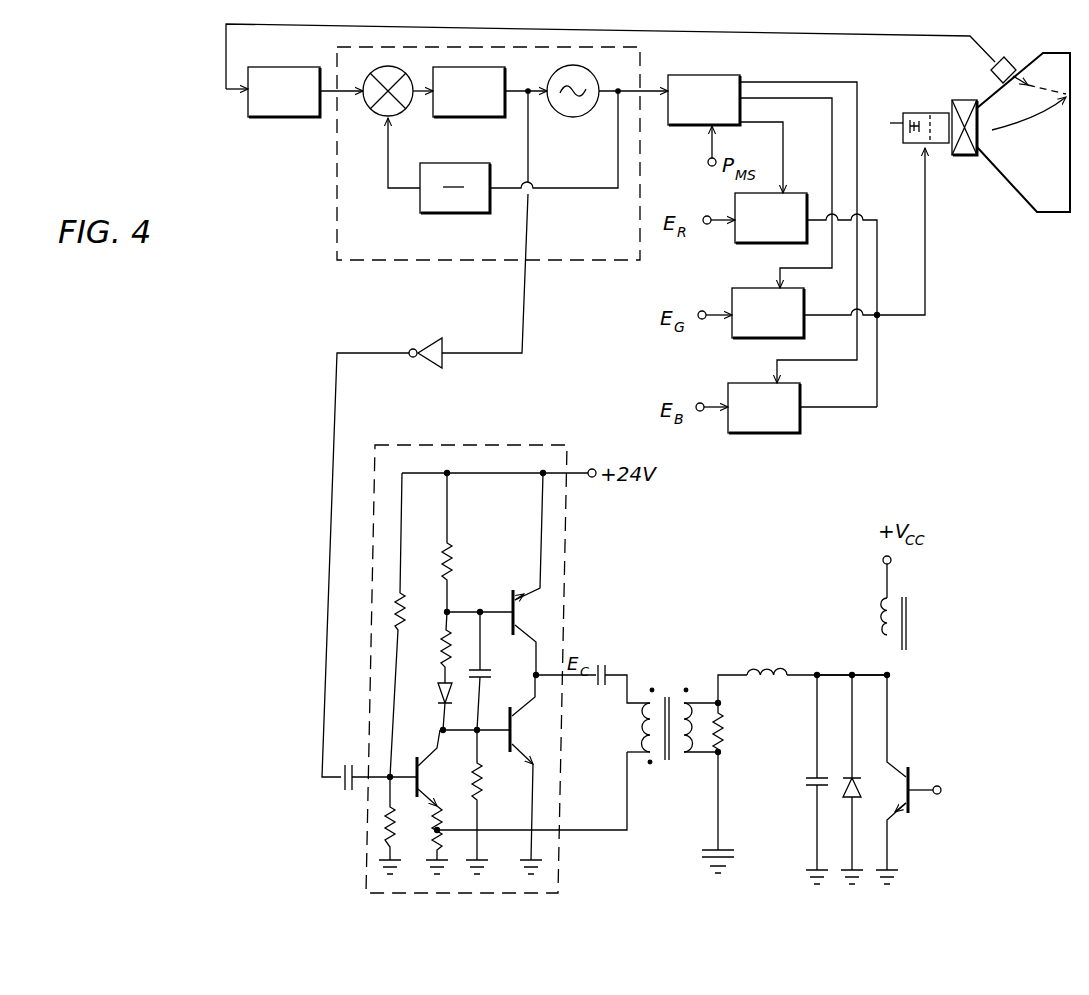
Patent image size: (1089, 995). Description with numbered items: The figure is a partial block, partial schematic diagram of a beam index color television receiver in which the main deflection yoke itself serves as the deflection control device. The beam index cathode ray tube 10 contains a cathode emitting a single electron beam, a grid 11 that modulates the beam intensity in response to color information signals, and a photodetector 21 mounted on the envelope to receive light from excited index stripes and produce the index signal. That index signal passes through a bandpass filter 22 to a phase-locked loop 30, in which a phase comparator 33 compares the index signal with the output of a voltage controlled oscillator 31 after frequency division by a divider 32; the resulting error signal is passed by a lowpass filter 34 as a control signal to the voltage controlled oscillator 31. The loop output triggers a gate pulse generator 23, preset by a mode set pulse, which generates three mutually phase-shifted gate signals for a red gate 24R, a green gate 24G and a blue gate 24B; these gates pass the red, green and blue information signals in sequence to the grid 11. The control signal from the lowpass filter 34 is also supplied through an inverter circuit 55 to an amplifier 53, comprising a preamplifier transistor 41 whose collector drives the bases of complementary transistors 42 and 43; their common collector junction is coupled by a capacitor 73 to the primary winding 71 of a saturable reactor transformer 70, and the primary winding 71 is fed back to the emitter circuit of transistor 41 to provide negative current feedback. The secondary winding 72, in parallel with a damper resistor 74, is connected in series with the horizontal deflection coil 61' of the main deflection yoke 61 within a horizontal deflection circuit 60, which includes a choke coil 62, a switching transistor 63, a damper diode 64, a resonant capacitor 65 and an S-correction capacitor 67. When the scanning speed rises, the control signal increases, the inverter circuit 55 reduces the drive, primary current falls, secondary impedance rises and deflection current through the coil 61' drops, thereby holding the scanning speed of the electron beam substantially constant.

The beam index cathode ray tube 10 is at (1010, 187).
The grid 11 is at (934, 118).
The photodetector 21 is at (991, 72).
The bandpass filter 22 is at (277, 118).
The gate pulse generator 23 is at (677, 126).
The red gate 24R is at (765, 244).
The green gate 24G is at (757, 339).
The blue gate 24B is at (750, 434).
The phase-locked loop 30 is at (418, 262).
The voltage controlled oscillator 31 is at (571, 118).
The divider 32 is at (438, 214).
The phase comparator 33 is at (370, 109).
The lowpass filter 34 is at (468, 118).
The preamplifier transistor 41 is at (422, 773).
The PNP transistor 42 is at (520, 608).
The NPN transistor 43 is at (517, 728).
The amplifier 53 is at (548, 893).
The inverter circuit 55 is at (428, 369).
The horizontal deflection circuit 60 is at (848, 655).
The main deflection yoke 61 is at (957, 150).
The horizontal deflection coil 61' is at (770, 692).
The choke coil 62 is at (907, 636).
The switching transistor 63 is at (887, 816).
The damper diode 64 is at (845, 801).
The resonant capacitor 65 is at (805, 781).
The S-correction capacitor 67 is at (730, 857).
The saturable reactor transformer 70 is at (664, 766).
The primary winding 71 is at (640, 725).
The secondary winding 72 is at (698, 706).
The capacitor 73 is at (600, 690).
The damper resistor 74 is at (736, 730).